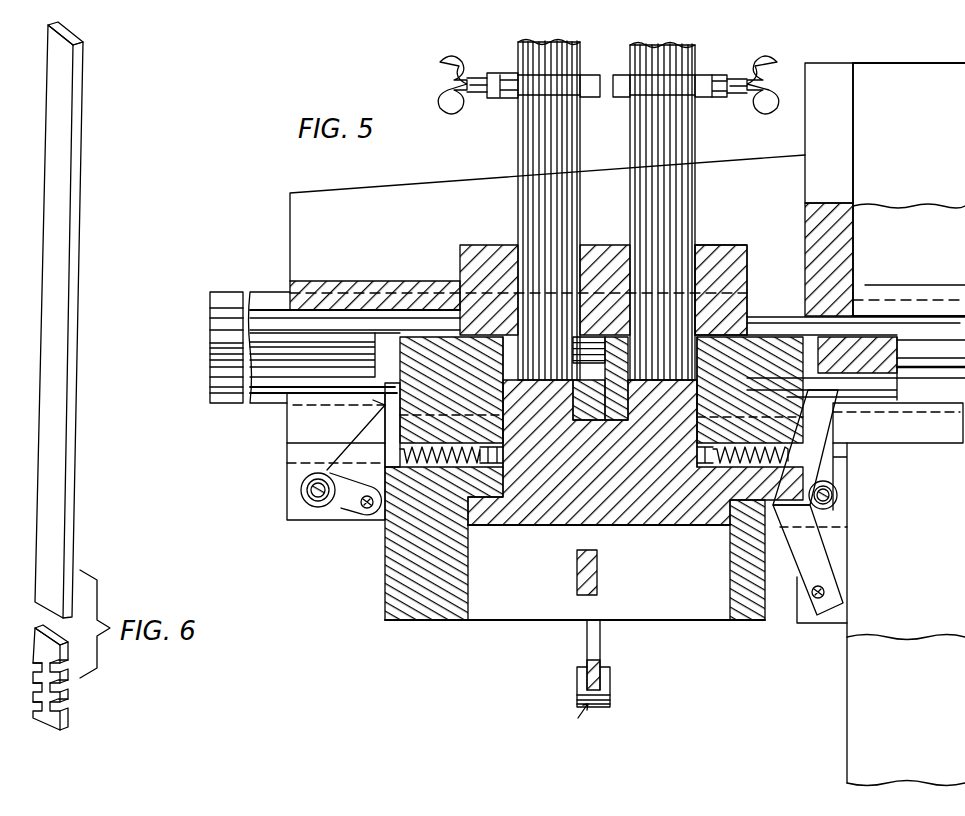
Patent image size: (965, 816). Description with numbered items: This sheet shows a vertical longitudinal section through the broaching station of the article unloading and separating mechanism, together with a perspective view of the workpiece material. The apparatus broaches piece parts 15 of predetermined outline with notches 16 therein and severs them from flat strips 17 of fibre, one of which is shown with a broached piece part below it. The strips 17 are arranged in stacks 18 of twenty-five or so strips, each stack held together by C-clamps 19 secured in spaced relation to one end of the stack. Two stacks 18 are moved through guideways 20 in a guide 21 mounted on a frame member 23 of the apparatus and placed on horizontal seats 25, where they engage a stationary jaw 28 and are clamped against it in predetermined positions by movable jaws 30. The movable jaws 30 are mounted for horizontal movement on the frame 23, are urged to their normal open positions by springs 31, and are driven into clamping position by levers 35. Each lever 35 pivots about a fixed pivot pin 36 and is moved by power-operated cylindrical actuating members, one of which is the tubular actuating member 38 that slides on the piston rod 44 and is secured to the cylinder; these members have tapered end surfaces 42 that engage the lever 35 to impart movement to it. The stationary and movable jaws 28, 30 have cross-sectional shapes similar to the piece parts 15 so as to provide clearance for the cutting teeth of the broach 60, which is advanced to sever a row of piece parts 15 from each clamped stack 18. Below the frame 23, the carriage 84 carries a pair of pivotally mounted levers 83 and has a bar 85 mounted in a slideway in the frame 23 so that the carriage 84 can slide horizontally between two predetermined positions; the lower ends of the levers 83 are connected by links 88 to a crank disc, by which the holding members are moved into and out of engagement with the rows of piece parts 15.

In FIG. 6, the piece part 15 is at (47, 728).
In FIG. 6, the notches 16 is at (65, 712).
In FIG. 6, the flat strip 17 is at (72, 443).
In FIG. 5, the flat strip 17 is at (525, 205).
In FIG. 5, the stack 18 is at (630, 55).
In FIG. 5, the C-clamp 19 is at (497, 88).
In FIG. 5, the guideway 20 is at (622, 258).
In FIG. 5, the guide 21 is at (722, 258).
In FIG. 5, the frame member 23 is at (525, 533).
In FIG. 5, the horizontal seat 25 is at (548, 368).
In FIG. 5, the stationary jaw 28 is at (600, 360).
In FIG. 5, the movable jaw 30 is at (490, 357).
In FIG. 5, the spring 31 is at (452, 450).
In FIG. 5, the lever 35 is at (330, 510).
In FIG. 5, the pivot pin 36 is at (367, 509).
In FIG. 5, the actuating member 38 is at (300, 483).
In FIG. 5, the tapered end surface 42 is at (307, 492).
In FIG. 5, the piston rod 44 is at (312, 494).
In FIG. 5, the broach 60 is at (278, 358).
In FIG. 5, the lever 83 is at (588, 650).
In FIG. 5, the carriage 84 is at (583, 726).
In FIG. 5, the bar 85 is at (577, 578).
In FIG. 5, the link 88 is at (580, 680).